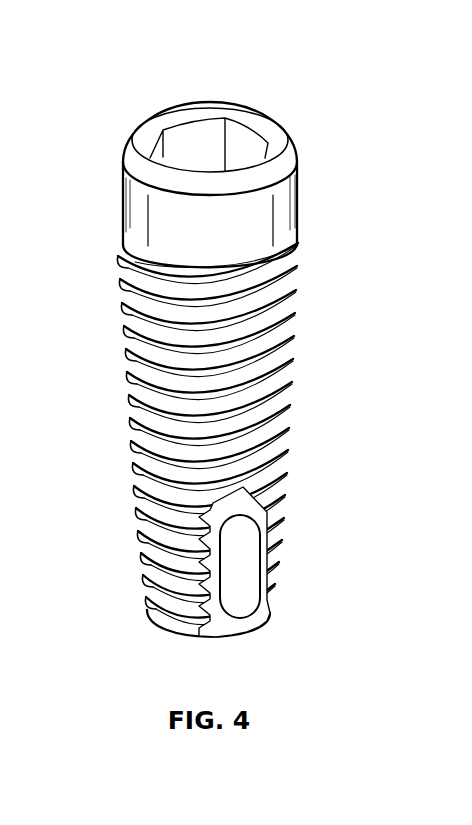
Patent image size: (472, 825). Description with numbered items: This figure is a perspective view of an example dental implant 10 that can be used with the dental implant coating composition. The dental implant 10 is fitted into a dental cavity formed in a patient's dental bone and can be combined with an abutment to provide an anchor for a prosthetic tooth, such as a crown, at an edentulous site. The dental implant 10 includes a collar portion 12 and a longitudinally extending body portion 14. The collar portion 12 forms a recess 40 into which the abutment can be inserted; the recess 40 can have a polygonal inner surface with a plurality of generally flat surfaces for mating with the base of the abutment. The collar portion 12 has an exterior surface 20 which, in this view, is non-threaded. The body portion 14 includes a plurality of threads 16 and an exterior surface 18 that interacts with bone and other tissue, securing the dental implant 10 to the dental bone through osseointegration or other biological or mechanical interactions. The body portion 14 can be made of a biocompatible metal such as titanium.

The dental implant 10 is at (112, 48).
The collar portion 12 is at (307, 112).
The body portion 14 is at (307, 232).
The threads 16 is at (142, 503).
The exterior surface 18 is at (148, 387).
The exterior surface 20 is at (138, 213).
The recess 40 is at (238, 148).